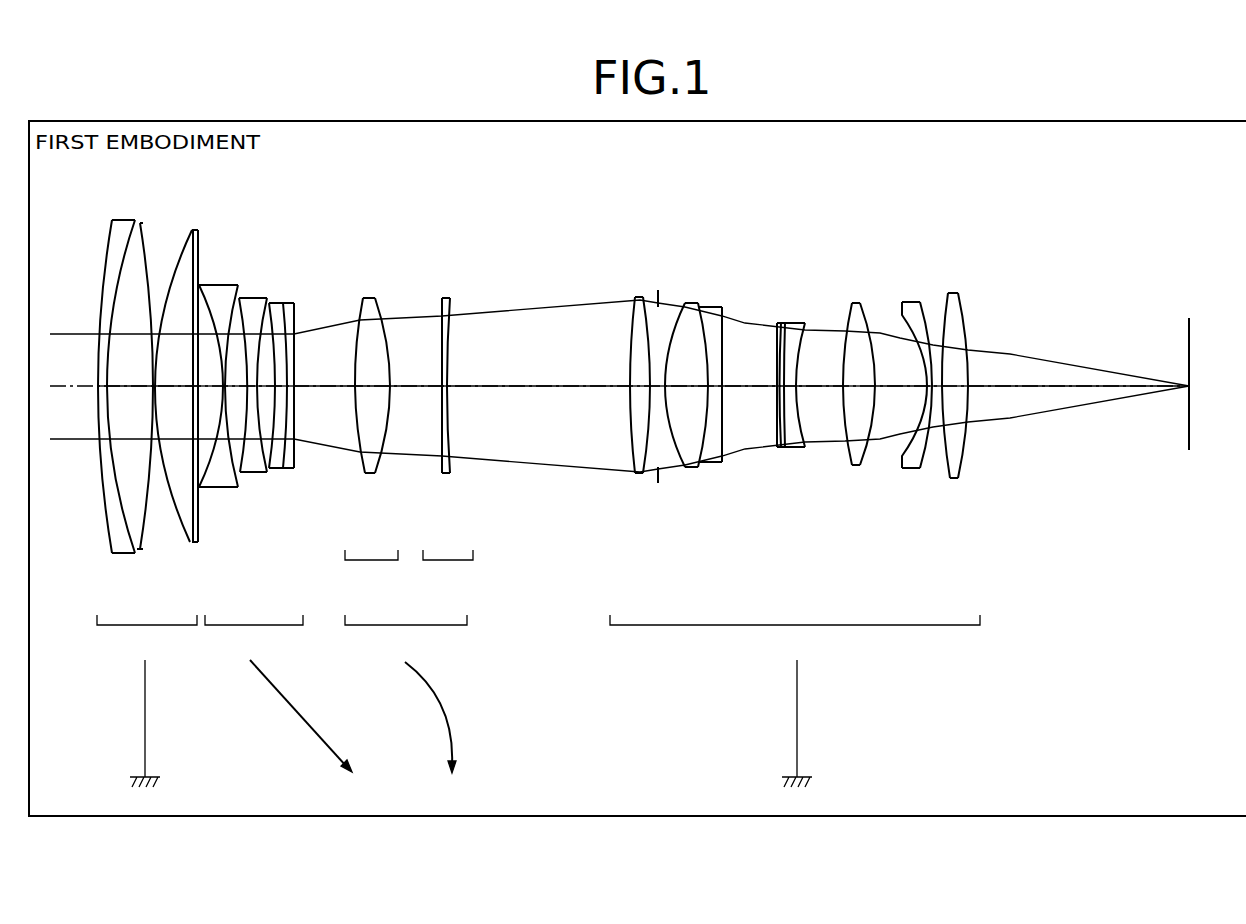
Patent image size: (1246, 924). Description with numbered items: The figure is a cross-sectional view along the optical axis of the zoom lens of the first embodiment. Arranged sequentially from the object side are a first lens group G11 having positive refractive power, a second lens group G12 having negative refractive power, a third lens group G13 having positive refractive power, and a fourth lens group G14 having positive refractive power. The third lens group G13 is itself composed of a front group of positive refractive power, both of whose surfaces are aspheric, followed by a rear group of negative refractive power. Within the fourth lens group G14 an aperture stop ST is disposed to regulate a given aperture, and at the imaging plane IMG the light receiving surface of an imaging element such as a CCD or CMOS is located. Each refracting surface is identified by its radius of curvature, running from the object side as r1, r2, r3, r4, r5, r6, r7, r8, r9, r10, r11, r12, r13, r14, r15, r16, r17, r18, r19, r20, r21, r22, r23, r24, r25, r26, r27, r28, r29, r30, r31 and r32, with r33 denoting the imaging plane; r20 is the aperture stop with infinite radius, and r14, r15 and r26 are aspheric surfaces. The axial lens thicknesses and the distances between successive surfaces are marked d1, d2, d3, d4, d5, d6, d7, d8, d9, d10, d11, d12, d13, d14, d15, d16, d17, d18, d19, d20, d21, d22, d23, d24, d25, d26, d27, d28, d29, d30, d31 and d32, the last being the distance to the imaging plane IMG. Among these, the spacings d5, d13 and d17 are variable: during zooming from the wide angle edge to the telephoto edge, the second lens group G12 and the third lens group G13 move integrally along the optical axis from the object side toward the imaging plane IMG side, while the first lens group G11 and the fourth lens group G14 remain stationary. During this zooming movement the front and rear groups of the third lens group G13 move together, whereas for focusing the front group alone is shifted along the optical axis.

The first surface radius of curvature r1 is at (103, 284).
The second surface radius of curvature r2 is at (122, 263).
The third surface radius of curvature r3 is at (144, 248).
The fourth surface radius of curvature r4 is at (175, 270).
The fifth surface radius of curvature r5 is at (192, 232).
The sixth surface radius of curvature r6 is at (211, 287).
The seventh surface radius of curvature r7 is at (215, 287).
The eighth surface radius of curvature r8 is at (233, 298).
The ninth surface radius of curvature r9 is at (253, 293).
The tenth surface radius of curvature r10 is at (266, 318).
The eleventh surface radius of curvature r11 is at (292, 317).
The twelfth surface radius of curvature r12 is at (289, 352).
The thirteenth surface radius of curvature r13 is at (296, 375).
The fourteenth surface radius of curvature r14 is at (360, 312).
The fifteenth surface radius of curvature r15 is at (390, 365).
The sixteenth surface radius of curvature r16 is at (443, 312).
The seventeenth surface radius of curvature r17 is at (449, 364).
The eighteenth surface radius of curvature r18 is at (629, 365).
The nineteenth surface radius of curvature r19 is at (647, 340).
The twentieth surface radius of curvature r20 is at (662, 302).
The twenty-first surface radius of curvature r21 is at (683, 315).
The twenty-second surface radius of curvature r22 is at (711, 311).
The twenty-third surface radius of curvature r23 is at (777, 375).
The twenty-fourth surface radius of curvature r24 is at (779, 346).
The twenty-fifth surface radius of curvature r25 is at (785, 324).
The twenty-sixth surface radius of curvature r26 is at (800, 370).
The twenty-seventh surface radius of curvature r27 is at (849, 316).
The twenty-eighth surface radius of curvature r28 is at (874, 373).
The twenty-ninth surface radius of curvature r29 is at (908, 303).
The thirtieth surface radius of curvature r30 is at (922, 320).
The thirty-first surface radius of curvature r31 is at (956, 302).
The thirty-second surface radius of curvature r32 is at (968, 330).
The thirty-third surface radius of curvature r33 is at (1190, 338).
The first lens thickness d1 is at (100, 387).
The second lens thickness d2 is at (128, 388).
The surface distance d3 is at (152, 392).
The third lens thickness d4 is at (174, 388).
The variable surface distance d5 is at (195, 388).
The fourth lens thickness d6 is at (211, 392).
The fifth lens thickness d7 is at (224, 392).
The surface distance d8 is at (237, 392).
The sixth lens thickness d9 is at (253, 392).
The seventh lens thickness d10 is at (267, 392).
The surface distance d11 is at (282, 392).
The eighth lens thickness d12 is at (291, 392).
The variable surface distance d13 is at (325, 388).
The ninth lens thickness d14 is at (370, 388).
The surface distance d15 is at (413, 388).
The tenth lens thickness d16 is at (448, 392).
The variable surface distance d17 is at (548, 388).
The eleventh lens thickness d18 is at (641, 388).
The surface distance d19 is at (655, 390).
The surface distance d20 is at (667, 390).
The twelfth lens thickness d21 is at (687, 390).
The thirteenth lens thickness d22 is at (714, 390).
The surface distance d23 is at (750, 388).
The fourteenth lens thickness d24 is at (780, 392).
The fifteenth lens thickness d25 is at (793, 392).
The surface distance d26 is at (822, 388).
The sixteenth lens thickness d27 is at (850, 392).
The surface distance d28 is at (900, 390).
The seventeenth lens thickness d29 is at (929, 392).
The surface distance d30 is at (938, 390).
The eighteenth lens thickness d31 is at (955, 390).
The surface distance to imaging plane d32 is at (1062, 387).
The aperture stop ST is at (658, 295).
The imaging plane IMG is at (1190, 430).
The first lens group G11 is at (147, 701).
The second lens group G12 is at (278, 693).
The third lens group G13 is at (406, 694).
The fourth lens group G14 is at (795, 701).